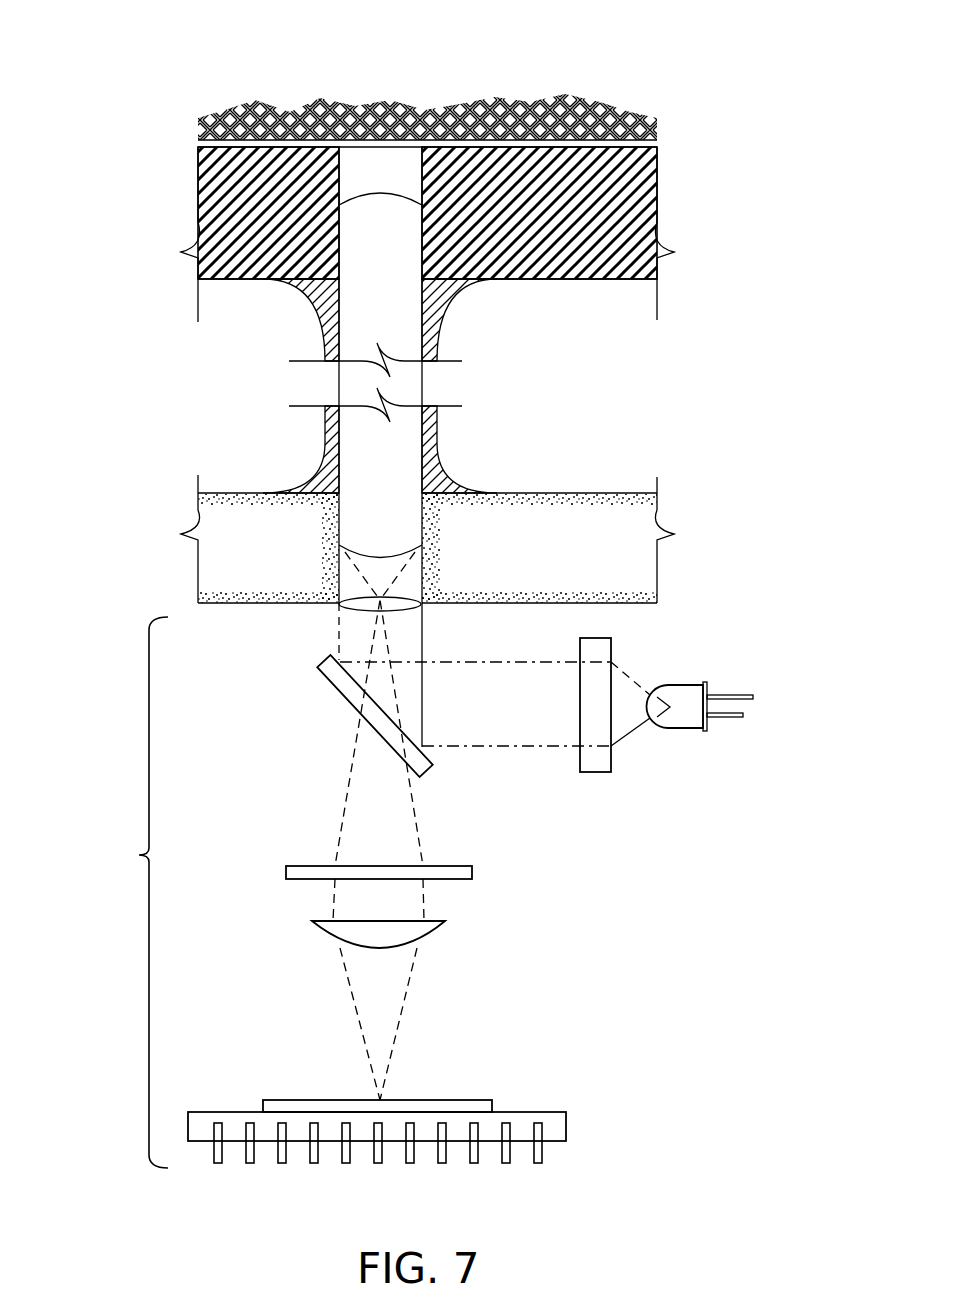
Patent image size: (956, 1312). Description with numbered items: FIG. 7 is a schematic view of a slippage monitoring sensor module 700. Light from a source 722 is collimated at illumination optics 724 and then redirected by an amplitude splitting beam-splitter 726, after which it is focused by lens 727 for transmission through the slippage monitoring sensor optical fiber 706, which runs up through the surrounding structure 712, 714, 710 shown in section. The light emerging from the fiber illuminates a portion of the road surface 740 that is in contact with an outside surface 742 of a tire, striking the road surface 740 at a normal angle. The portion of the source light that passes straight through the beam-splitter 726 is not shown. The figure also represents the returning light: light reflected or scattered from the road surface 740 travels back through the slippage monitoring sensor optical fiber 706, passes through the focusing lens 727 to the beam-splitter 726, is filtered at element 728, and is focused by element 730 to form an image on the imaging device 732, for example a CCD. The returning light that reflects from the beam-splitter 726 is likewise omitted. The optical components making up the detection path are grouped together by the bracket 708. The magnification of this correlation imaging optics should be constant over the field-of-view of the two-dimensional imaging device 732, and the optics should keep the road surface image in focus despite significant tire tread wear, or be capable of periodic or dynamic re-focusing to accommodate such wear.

The slippage monitoring sensor module 700 is at (480, 585).
The outside surface of a tire 742 is at (575, 140).
The road surface 740 is at (372, 142).
The housing body 712 is at (612, 280).
The slippage monitoring sensor optical fiber 706 is at (400, 323).
The channel wall 714 is at (450, 463).
The substrate layer 710 is at (585, 530).
The lens 727 is at (428, 597).
The amplitude splitting beam-splitter 726 is at (327, 677).
The source 722 is at (686, 722).
The illumination optics 724 is at (595, 765).
The filtering element 728 is at (300, 866).
The focusing element 730 is at (325, 932).
The imaging device 732 is at (555, 1115).
The optical detection assembly 708 is at (128, 892).